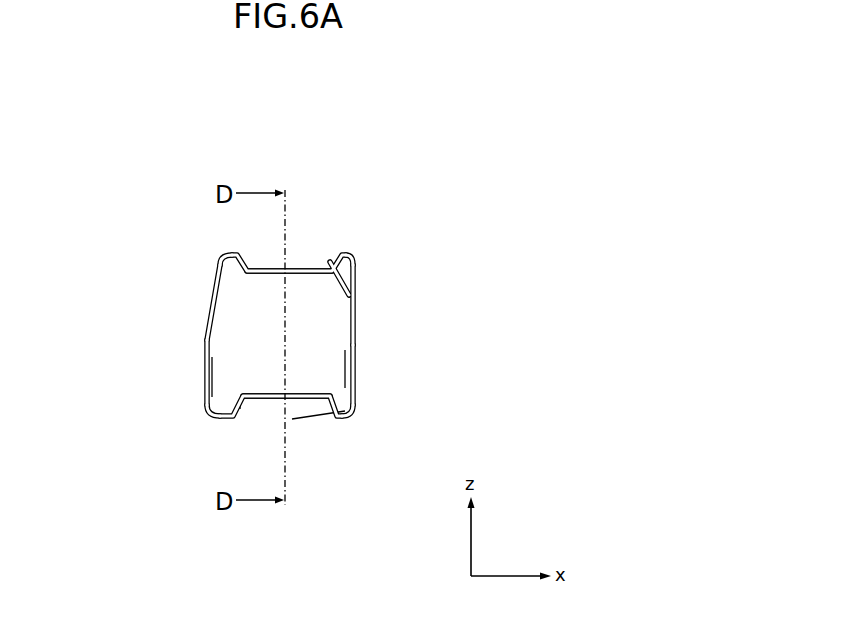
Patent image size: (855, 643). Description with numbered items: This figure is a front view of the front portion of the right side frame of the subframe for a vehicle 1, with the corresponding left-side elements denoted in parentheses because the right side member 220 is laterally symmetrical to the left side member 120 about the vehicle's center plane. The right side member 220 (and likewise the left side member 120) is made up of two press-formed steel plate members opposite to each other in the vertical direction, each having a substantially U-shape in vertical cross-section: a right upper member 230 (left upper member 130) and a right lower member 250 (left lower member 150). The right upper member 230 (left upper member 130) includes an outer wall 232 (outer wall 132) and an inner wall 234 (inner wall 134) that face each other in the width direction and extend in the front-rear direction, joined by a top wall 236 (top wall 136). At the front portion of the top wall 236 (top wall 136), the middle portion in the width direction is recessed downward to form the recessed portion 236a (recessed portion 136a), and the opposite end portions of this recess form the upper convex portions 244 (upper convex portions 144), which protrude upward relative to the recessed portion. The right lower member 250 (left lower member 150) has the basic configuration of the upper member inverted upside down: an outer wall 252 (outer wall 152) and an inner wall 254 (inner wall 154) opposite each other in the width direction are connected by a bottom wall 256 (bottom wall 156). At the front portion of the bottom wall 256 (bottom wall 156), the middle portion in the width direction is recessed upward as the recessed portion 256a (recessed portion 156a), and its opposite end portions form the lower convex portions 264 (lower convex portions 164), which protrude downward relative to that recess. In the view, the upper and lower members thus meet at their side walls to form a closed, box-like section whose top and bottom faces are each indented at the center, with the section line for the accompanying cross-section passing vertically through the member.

The subframe for a vehicle 1 is at (512, 190).
The right side member 220 is at (274, 320).
The left side member 120 is at (318, 238).
The right upper member 230 is at (276, 234).
The left upper member 130 is at (342, 239).
The outer wall 232 is at (138, 302).
The outer wall 132 is at (212, 302).
The inner wall 234 is at (413, 303).
The inner wall 134 is at (357, 294).
The top wall 236 is at (267, 197).
The top wall 136 is at (241, 252).
The recessed portion 236a is at (292, 197).
The recessed portion 136a is at (315, 268).
The upper convex portions 244 is at (291, 248).
The upper convex portions 144 is at (224, 251).
The right lower member 250 is at (274, 429).
The left lower member 150 is at (198, 430).
The outer wall 252 is at (133, 372).
The outer wall 152 is at (204, 384).
The inner wall 254 is at (420, 375).
The inner wall 154 is at (356, 384).
The bottom wall 256 is at (308, 457).
The bottom wall 156 is at (250, 419).
The recessed portion 256a is at (340, 457).
The recessed portion 156a is at (291, 399).
The lower convex portions 264 is at (253, 439).
The lower convex portions 164 is at (214, 418).